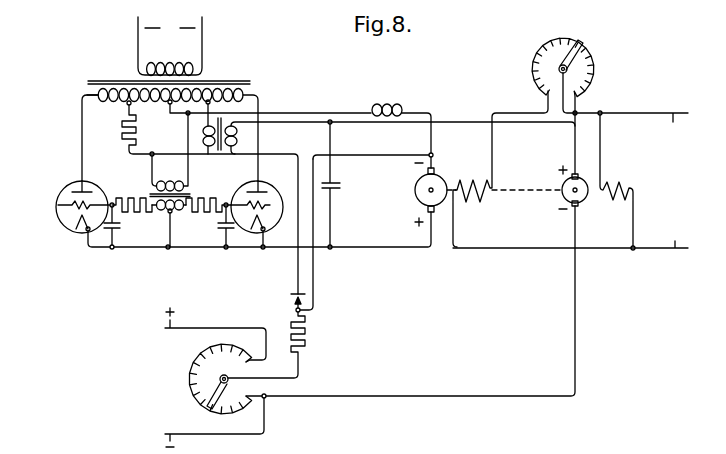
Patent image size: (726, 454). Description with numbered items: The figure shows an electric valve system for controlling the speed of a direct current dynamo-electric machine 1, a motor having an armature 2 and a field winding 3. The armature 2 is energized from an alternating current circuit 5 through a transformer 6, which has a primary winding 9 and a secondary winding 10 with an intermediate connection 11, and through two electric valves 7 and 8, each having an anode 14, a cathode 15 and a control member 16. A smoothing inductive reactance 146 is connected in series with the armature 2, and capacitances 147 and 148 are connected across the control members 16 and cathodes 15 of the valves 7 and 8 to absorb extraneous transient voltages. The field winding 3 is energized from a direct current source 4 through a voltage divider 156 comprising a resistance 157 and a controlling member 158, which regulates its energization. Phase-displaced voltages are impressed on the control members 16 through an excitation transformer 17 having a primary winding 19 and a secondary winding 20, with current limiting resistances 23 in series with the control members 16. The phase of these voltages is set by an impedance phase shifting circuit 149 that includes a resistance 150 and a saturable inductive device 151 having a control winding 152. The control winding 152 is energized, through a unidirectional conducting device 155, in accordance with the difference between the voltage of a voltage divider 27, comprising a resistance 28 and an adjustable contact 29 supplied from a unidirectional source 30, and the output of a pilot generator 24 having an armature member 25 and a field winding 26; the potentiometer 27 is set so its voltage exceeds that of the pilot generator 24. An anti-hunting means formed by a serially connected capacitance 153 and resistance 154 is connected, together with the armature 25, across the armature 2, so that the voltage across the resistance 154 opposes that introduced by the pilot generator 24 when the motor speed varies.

The alternating current circuit 5 is at (170, 46).
The primary winding 9 is at (180, 64).
The transformer 6 is at (250, 83).
The secondary winding 10 is at (104, 102).
The intermediate connection 11 is at (170, 105).
The resistance 150 is at (122, 136).
The phase shifting circuit 149 is at (170, 135).
The saturable inductive device 151 is at (218, 135).
The control winding 152 is at (240, 131).
The primary winding 19 is at (171, 151).
The transformer 17 is at (191, 191).
The secondary winding 20 is at (170, 223).
The current limiting resistances 23 is at (171, 205).
The capacitance 147 is at (121, 229).
The capacitance 148 is at (217, 229).
The electric valve 7 is at (70, 188).
The electric valve 8 is at (262, 188).
The anode 14 is at (92, 192).
The control member 16 is at (58, 205).
The cathode 15 is at (72, 222).
The smoothing inductive reactance 146 is at (409, 106).
The capacitance 153 is at (342, 185).
The dynamo-electric machine 1 is at (429, 187).
The armature 2 is at (415, 190).
The field winding 3 is at (500, 169).
The source of direct current 4 is at (570, 160).
The pilot generator 24 is at (438, 281).
The armature member 25 is at (562, 196).
The field winding 26 is at (633, 184).
The voltage divider 156 is at (565, 82).
The resistance 157 is at (586, 58).
The controlling member 158 is at (557, 64).
The unidirectional conducting device 155 is at (295, 294).
The resistance 154 is at (292, 320).
The voltage divider 27 is at (221, 381).
The resistance 28 is at (222, 350).
The adjustable contact 29 is at (236, 393).
The source of unidirectional voltage 30 is at (213, 377).